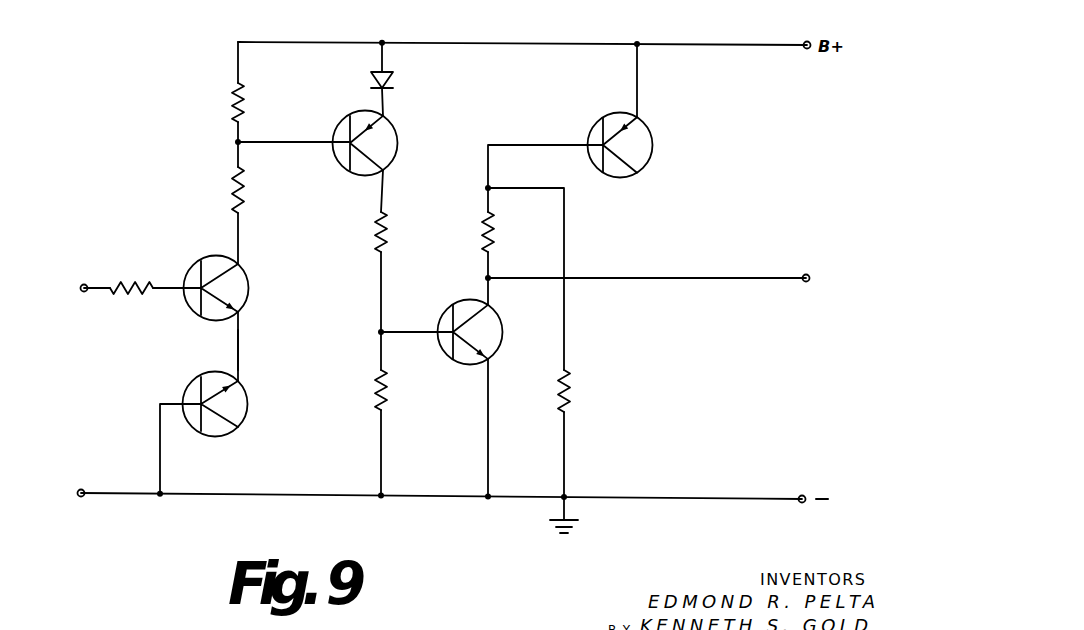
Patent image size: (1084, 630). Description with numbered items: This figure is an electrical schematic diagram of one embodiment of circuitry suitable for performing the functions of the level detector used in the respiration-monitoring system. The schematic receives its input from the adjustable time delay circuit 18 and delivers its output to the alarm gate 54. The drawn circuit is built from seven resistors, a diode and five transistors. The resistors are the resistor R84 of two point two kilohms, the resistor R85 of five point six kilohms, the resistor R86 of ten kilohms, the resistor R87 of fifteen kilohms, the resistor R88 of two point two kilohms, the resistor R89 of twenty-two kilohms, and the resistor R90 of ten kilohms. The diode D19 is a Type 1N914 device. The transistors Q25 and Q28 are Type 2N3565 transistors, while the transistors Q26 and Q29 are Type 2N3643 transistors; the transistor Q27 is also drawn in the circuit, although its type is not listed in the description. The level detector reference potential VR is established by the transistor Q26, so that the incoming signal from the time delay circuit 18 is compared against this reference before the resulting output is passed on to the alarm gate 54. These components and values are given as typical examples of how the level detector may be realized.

The resistor R84 is at (145, 268).
The resistor R85 is at (230, 100).
The resistor R86 is at (244, 192).
The resistor R87 is at (388, 236).
The resistor R88 is at (388, 389).
The resistor R89 is at (495, 235).
The resistor R90 is at (572, 387).
The diode D19 is at (394, 80).
The transistor Q25 is at (248, 272).
The transistor Q26 is at (248, 408).
The transistor Q27 is at (396, 128).
The transistor Q28 is at (498, 316).
The transistor Q29 is at (650, 129).
The level detector reference potential VR is at (243, 349).
The adjustable time delay circuit 18 is at (97, 380).
The alarm gate 54 is at (842, 292).